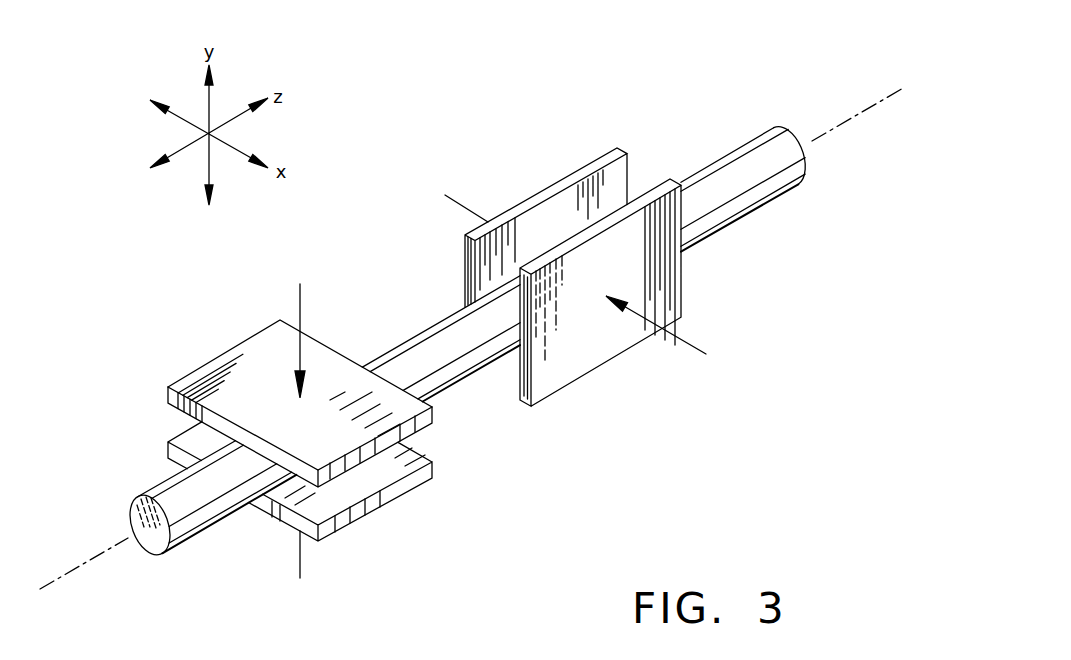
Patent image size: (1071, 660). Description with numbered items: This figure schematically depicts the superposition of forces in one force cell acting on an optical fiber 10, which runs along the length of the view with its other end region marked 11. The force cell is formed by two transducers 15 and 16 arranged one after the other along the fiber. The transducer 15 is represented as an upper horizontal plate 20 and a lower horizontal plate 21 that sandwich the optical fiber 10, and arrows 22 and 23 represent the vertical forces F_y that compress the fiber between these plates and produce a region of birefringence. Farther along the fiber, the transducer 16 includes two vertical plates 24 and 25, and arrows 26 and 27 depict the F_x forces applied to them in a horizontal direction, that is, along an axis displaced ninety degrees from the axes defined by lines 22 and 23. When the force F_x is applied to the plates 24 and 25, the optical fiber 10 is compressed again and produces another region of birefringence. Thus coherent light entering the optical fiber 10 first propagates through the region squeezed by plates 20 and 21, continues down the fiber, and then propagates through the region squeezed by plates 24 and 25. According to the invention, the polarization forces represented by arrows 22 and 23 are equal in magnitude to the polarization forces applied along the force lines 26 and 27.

The optical fiber 10 is at (764, 208).
The shaft (input end) 11 is at (92, 564).
The transducer 15 is at (286, 436).
The transducer 16 is at (607, 288).
The upper horizontal plate 20 is at (431, 413).
The lower horizontal plate 21 is at (425, 484).
The arrow 22 is at (299, 308).
The arrow 23 is at (299, 553).
The vertical plate 24 is at (593, 163).
The vertical plate 25 is at (653, 190).
The arrow 26 is at (462, 204).
The arrow 27 is at (685, 340).